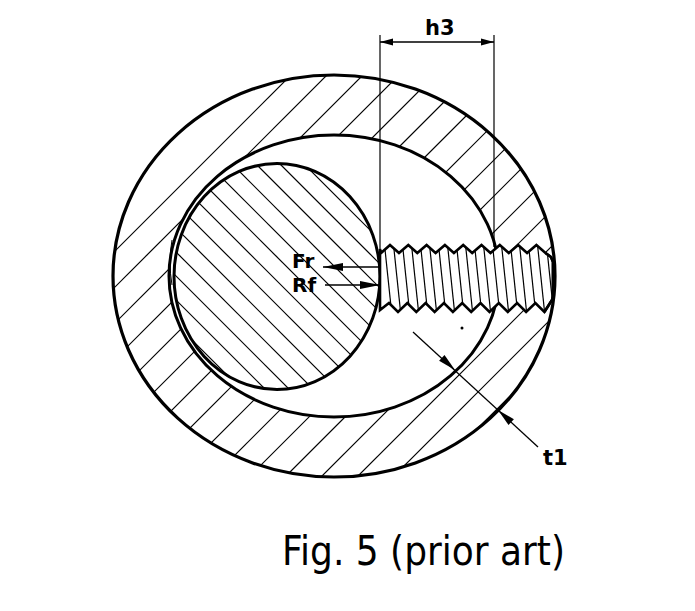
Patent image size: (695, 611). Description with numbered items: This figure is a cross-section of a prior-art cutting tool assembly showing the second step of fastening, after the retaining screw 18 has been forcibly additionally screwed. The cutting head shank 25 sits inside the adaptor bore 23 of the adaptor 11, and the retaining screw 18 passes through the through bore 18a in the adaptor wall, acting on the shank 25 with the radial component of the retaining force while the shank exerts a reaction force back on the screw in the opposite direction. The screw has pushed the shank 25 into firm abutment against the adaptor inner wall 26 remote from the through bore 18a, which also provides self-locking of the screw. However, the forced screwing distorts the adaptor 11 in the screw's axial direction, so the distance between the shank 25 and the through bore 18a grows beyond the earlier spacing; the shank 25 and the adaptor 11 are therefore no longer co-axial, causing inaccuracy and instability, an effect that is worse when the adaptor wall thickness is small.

The adaptor 11 is at (522, 212).
The retaining screw 18 is at (532, 275).
The through bore 18a is at (552, 302).
The adaptor bore 23 is at (462, 328).
The cutting head shank 25 is at (248, 348).
The adaptor inner wall 26 is at (173, 243).